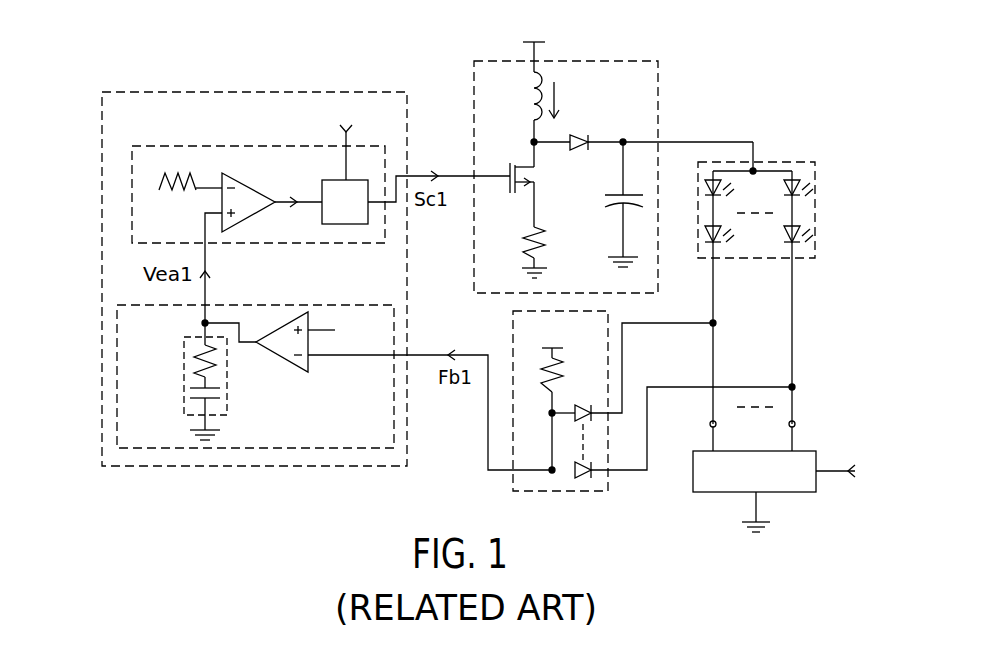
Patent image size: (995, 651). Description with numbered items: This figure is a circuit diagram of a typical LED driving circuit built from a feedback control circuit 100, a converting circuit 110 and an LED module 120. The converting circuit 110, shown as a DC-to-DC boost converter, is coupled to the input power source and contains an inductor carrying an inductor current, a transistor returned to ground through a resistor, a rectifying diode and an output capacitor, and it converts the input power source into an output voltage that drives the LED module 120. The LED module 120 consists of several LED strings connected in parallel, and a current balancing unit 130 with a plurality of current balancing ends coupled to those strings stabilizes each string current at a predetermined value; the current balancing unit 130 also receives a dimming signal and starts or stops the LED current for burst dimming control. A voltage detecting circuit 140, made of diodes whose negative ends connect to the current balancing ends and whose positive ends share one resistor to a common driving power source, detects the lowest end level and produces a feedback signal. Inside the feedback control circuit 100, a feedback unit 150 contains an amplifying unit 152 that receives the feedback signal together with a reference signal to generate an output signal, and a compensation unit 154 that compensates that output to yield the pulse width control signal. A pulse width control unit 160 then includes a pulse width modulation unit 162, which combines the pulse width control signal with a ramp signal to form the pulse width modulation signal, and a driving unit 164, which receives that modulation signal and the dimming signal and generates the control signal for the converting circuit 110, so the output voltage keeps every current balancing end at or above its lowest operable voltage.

The feedback control circuit 100 is at (102, 93).
The converting circuit 110 is at (658, 73).
The LED module 120 is at (815, 221).
The current balancing unit 130 is at (738, 481).
The voltage detecting circuit 140 is at (517, 330).
The feedback unit 150 is at (117, 307).
The amplifying unit 152 is at (288, 358).
The compensation unit 154 is at (184, 350).
The pulse width control unit 160 is at (162, 146).
The pulse width modulation unit 162 is at (257, 192).
The driving unit 164 is at (329, 213).